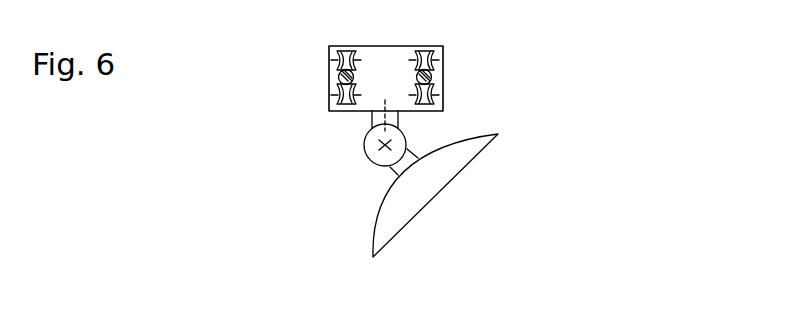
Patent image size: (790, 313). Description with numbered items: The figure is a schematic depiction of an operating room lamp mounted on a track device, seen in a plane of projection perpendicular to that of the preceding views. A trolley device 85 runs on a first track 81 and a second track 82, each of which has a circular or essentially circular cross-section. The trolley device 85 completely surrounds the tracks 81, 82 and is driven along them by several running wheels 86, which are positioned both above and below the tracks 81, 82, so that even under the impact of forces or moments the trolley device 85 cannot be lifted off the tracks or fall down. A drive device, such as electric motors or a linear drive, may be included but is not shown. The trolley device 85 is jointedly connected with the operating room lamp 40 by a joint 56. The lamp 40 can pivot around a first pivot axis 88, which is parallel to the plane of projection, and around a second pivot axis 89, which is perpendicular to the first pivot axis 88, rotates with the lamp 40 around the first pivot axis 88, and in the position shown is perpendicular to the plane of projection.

The first track 81 is at (340, 81).
The second track 82 is at (433, 78).
The trolley device 85 is at (442, 98).
The running wheels 86 is at (340, 101).
The first pivot axis 88 is at (383, 118).
The second pivot axis 89 is at (378, 146).
The joint 56 is at (371, 160).
The operating room lamp 40 is at (468, 162).